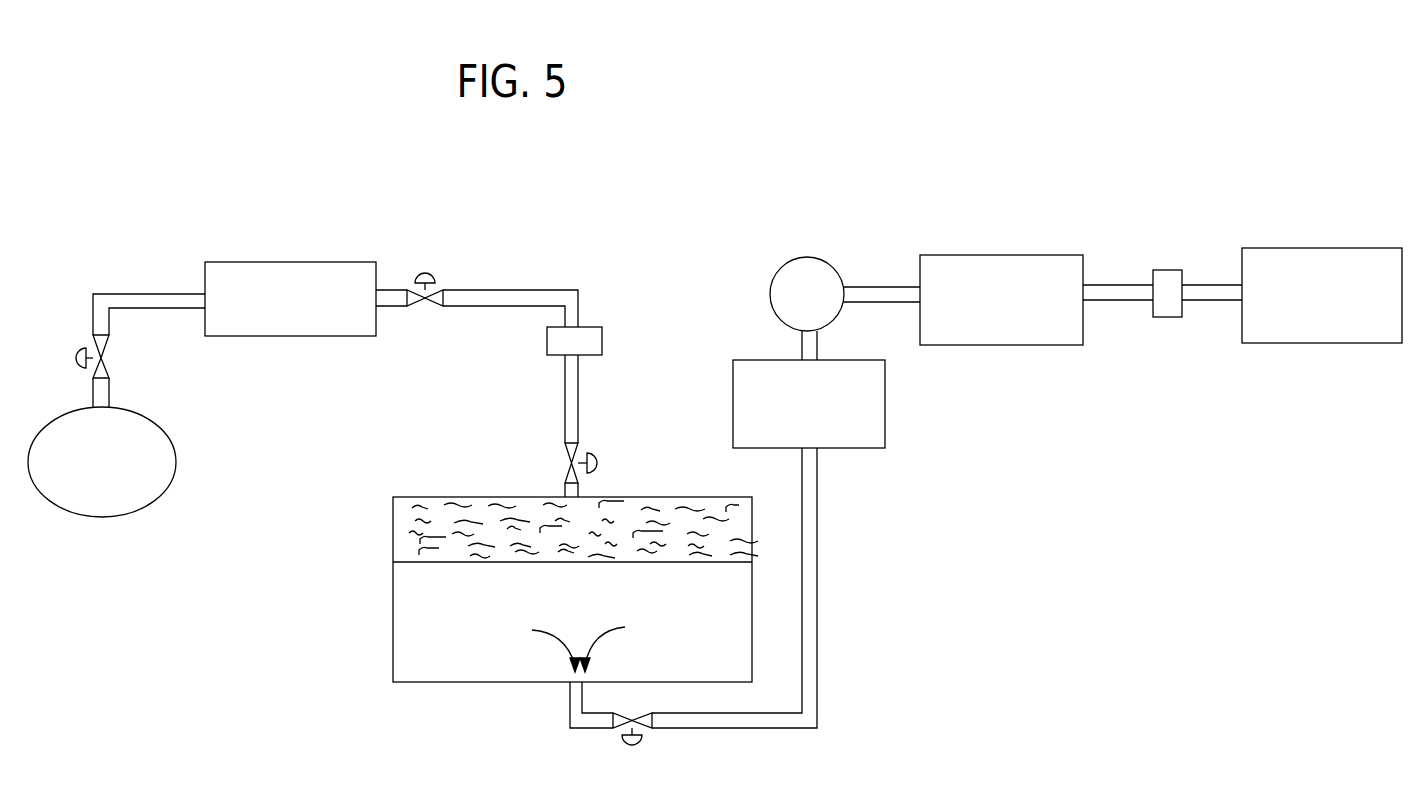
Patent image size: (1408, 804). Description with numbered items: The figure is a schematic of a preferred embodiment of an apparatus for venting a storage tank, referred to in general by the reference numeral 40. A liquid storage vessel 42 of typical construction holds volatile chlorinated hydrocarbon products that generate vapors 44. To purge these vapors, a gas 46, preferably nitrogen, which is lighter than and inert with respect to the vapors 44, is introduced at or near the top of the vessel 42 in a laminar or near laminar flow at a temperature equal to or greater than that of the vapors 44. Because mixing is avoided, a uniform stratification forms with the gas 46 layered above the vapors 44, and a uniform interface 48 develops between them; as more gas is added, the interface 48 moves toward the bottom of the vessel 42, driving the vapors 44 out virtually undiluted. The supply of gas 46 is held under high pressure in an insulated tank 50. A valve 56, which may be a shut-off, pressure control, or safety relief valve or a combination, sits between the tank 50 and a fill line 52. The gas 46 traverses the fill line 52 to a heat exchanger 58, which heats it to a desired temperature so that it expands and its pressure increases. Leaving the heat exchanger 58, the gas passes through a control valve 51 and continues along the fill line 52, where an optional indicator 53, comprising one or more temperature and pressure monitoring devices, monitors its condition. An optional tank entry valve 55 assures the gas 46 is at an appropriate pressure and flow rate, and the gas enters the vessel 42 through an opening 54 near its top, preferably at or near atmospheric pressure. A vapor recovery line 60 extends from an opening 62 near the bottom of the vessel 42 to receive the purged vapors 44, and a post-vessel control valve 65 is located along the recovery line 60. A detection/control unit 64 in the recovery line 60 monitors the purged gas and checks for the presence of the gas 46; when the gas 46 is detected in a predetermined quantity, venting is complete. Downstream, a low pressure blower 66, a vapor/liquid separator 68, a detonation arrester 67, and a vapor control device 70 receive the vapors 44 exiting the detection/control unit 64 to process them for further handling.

The apparatus for performing the storage tank venting method 40 is at (923, 217).
The liquid storage vessel 42 is at (420, 497).
The vapors 44 is at (452, 632).
The gas 46 is at (670, 508).
The interface 48 is at (437, 563).
The insulated tank 50 is at (168, 490).
The control valve 51 is at (430, 272).
The fill line 52 is at (132, 290).
The indicator 53 is at (593, 327).
The opening 54 is at (565, 482).
The tank entry valve 55 is at (570, 463).
The valve 56 is at (103, 358).
The heat exchanger 58 is at (345, 260).
The vapor recovery line 60 is at (817, 493).
The opening 62 is at (573, 688).
The detection/control unit 64 is at (883, 403).
The post-vessel control valve 65 is at (643, 743).
The low pressure blower 66 is at (830, 262).
The detonation arrester 67 is at (1168, 270).
The vapor/liquid separator 68 is at (1055, 255).
The vapor control device 70 is at (1350, 248).